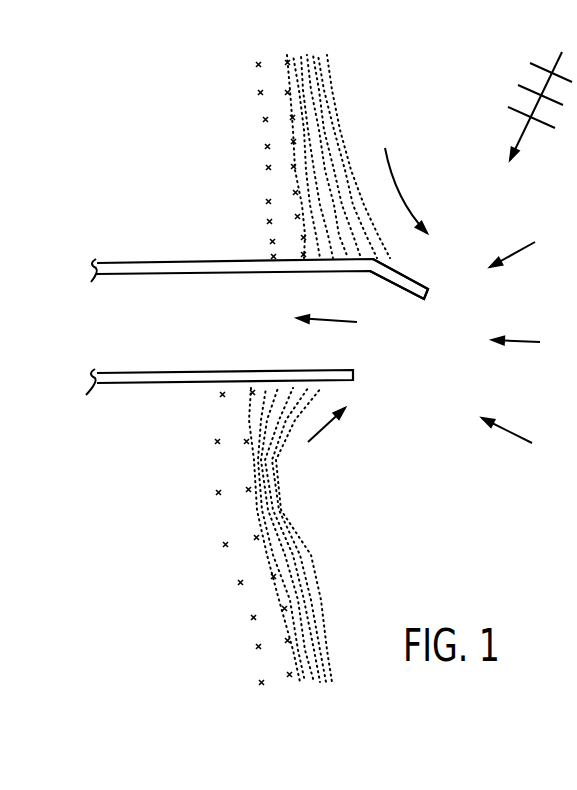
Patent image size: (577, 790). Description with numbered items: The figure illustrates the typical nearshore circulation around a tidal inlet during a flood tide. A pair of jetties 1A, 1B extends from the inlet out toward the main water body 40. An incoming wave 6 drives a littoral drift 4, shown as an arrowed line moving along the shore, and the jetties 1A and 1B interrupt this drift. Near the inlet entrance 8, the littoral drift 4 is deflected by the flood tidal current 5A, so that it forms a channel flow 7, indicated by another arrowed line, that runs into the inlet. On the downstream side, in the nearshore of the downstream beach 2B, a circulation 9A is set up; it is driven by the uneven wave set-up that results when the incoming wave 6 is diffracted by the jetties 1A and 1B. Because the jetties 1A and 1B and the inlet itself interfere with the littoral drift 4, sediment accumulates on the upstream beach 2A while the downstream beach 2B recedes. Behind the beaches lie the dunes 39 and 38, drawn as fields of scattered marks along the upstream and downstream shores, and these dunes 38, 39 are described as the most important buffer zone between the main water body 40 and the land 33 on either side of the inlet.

The jetty 1A is at (170, 255).
The jetty 1B is at (179, 395).
The upstream beach 2A is at (322, 142).
The downstream beach 2B is at (293, 525).
The littoral drift 4 is at (406, 190).
The flood tidal current 5A is at (520, 293).
The incoming wave 6 is at (540, 108).
The channel flow 7 is at (327, 303).
The inlet entrance 8 is at (408, 302).
The circulation 9A is at (337, 429).
The land 33 is at (149, 322).
The dune 38 is at (253, 537).
The dune 39 is at (275, 159).
The main water body 40 is at (524, 406).